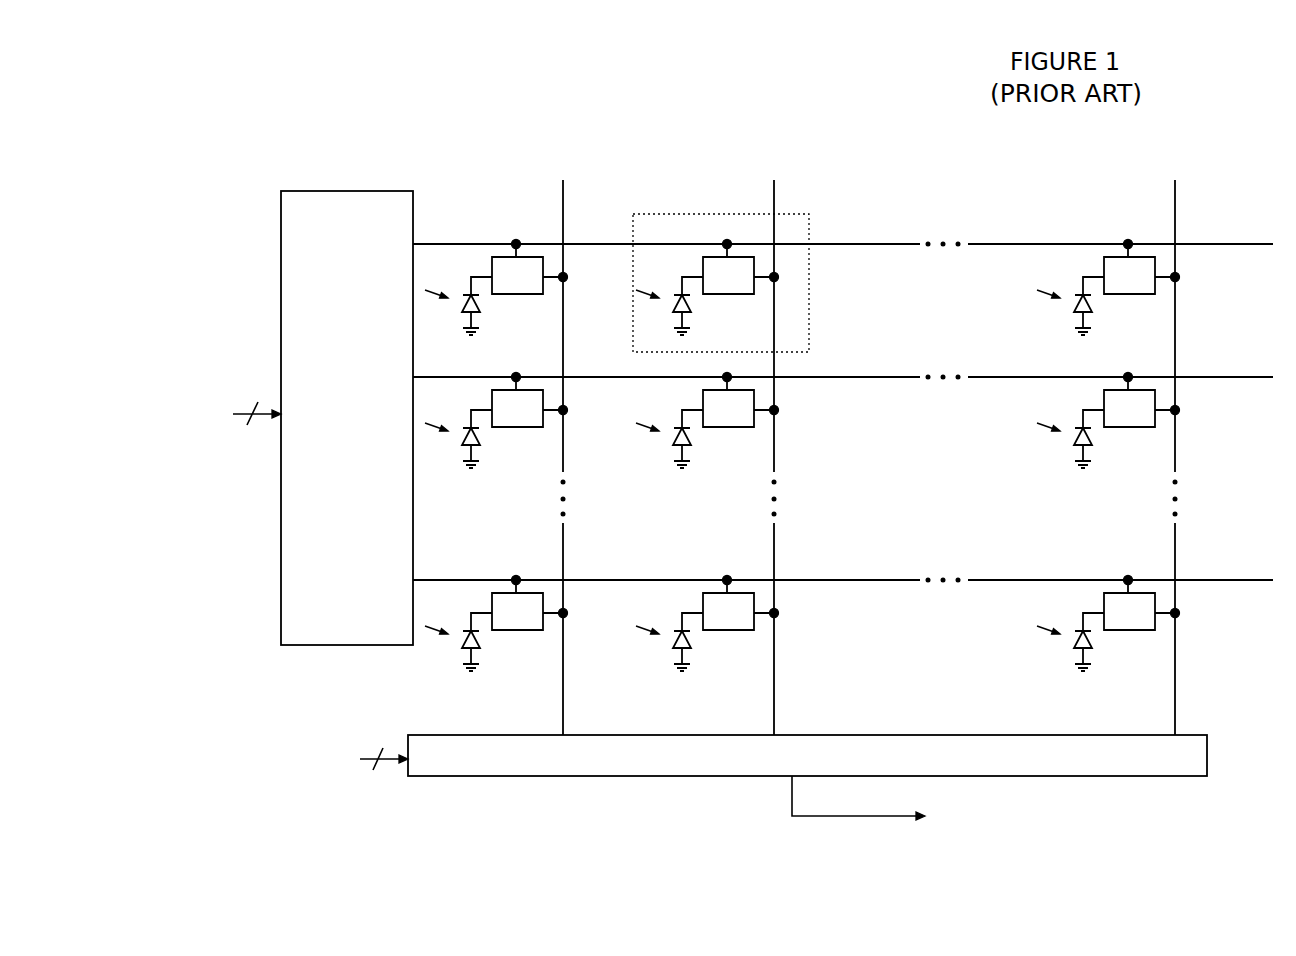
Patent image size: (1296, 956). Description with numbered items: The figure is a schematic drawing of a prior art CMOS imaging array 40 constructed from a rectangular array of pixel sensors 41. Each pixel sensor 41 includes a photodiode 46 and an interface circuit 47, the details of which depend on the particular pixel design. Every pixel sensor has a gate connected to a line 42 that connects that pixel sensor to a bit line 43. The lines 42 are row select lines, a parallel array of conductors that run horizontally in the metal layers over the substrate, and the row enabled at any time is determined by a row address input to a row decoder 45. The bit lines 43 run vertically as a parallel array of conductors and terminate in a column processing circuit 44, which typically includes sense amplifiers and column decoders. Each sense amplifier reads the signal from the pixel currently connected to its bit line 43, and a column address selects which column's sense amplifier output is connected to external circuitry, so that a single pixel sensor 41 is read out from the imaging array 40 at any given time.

The imaging array 40 is at (209, 178).
The pixel sensor 41 is at (688, 214).
The line 42 is at (853, 244).
The bit line 43 is at (563, 558).
The column processing circuit 44 is at (882, 735).
The row decoder 45 is at (358, 191).
The photodiode 46 is at (479, 300).
The interface circuit 47 is at (500, 262).